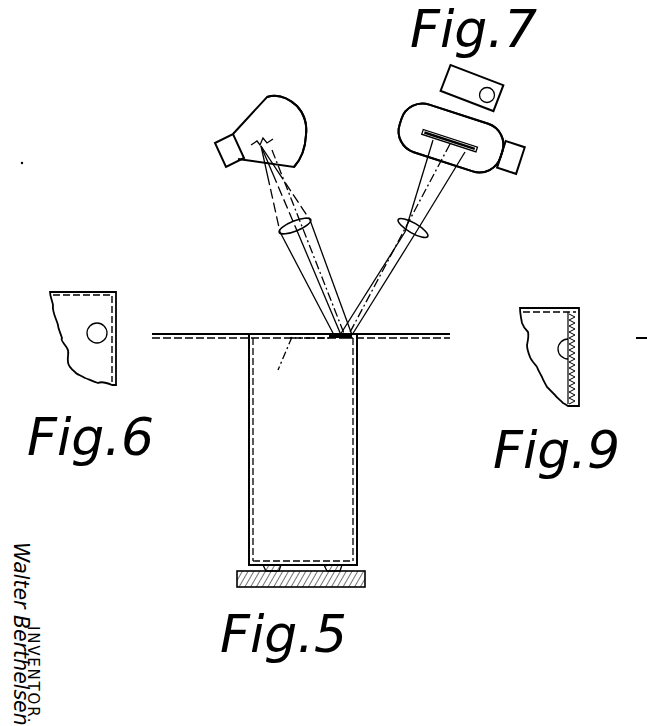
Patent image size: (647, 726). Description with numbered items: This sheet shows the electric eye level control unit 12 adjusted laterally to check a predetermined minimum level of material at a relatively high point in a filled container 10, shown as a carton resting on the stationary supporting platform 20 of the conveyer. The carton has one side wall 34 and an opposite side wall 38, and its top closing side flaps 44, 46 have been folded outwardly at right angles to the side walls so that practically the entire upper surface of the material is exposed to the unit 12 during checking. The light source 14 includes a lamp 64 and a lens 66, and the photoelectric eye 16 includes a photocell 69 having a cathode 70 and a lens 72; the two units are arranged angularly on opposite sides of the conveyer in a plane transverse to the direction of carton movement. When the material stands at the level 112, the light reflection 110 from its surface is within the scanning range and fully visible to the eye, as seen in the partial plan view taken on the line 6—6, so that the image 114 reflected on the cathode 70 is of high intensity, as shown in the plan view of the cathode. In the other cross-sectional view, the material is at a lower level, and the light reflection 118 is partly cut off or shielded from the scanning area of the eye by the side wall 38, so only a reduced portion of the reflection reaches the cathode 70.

In FIG. 5, the filled container 10 is at (360, 452).
In FIG. 7, the electric eye level control unit 12 is at (359, 104).
In FIG. 7, the light source 14 is at (246, 107).
In FIG. 7, the photoelectric eye 16 is at (506, 128).
In FIG. 5, the stationary supporting platform 20 is at (362, 587).
In FIG. 5, the side wall 34 is at (249, 386).
In FIG. 5, the side wall 38 is at (357, 393).
In FIG. 5, the side flap 44 is at (190, 333).
In FIG. 5, the side flap 46 is at (418, 333).
In FIG. 5, the section line 6 is at (267, 358).
In FIG. 7, the lamp 64 is at (304, 120).
In FIG. 7, the lens 66 is at (282, 230).
In FIG. 7, the photocell 69 is at (400, 147).
In FIG. 7, the cathode 70 is at (437, 144).
In FIG. 7, the lens 72 is at (425, 229).
In FIG. 5, the light reflection 110 is at (342, 339).
In FIG. 6, the light reflection 110 is at (94, 324).
In FIG. 5, the level 112 is at (297, 361).
In FIG. 7, the image 114 is at (494, 90).
In FIG. 9, the light reflection 118 is at (558, 350).